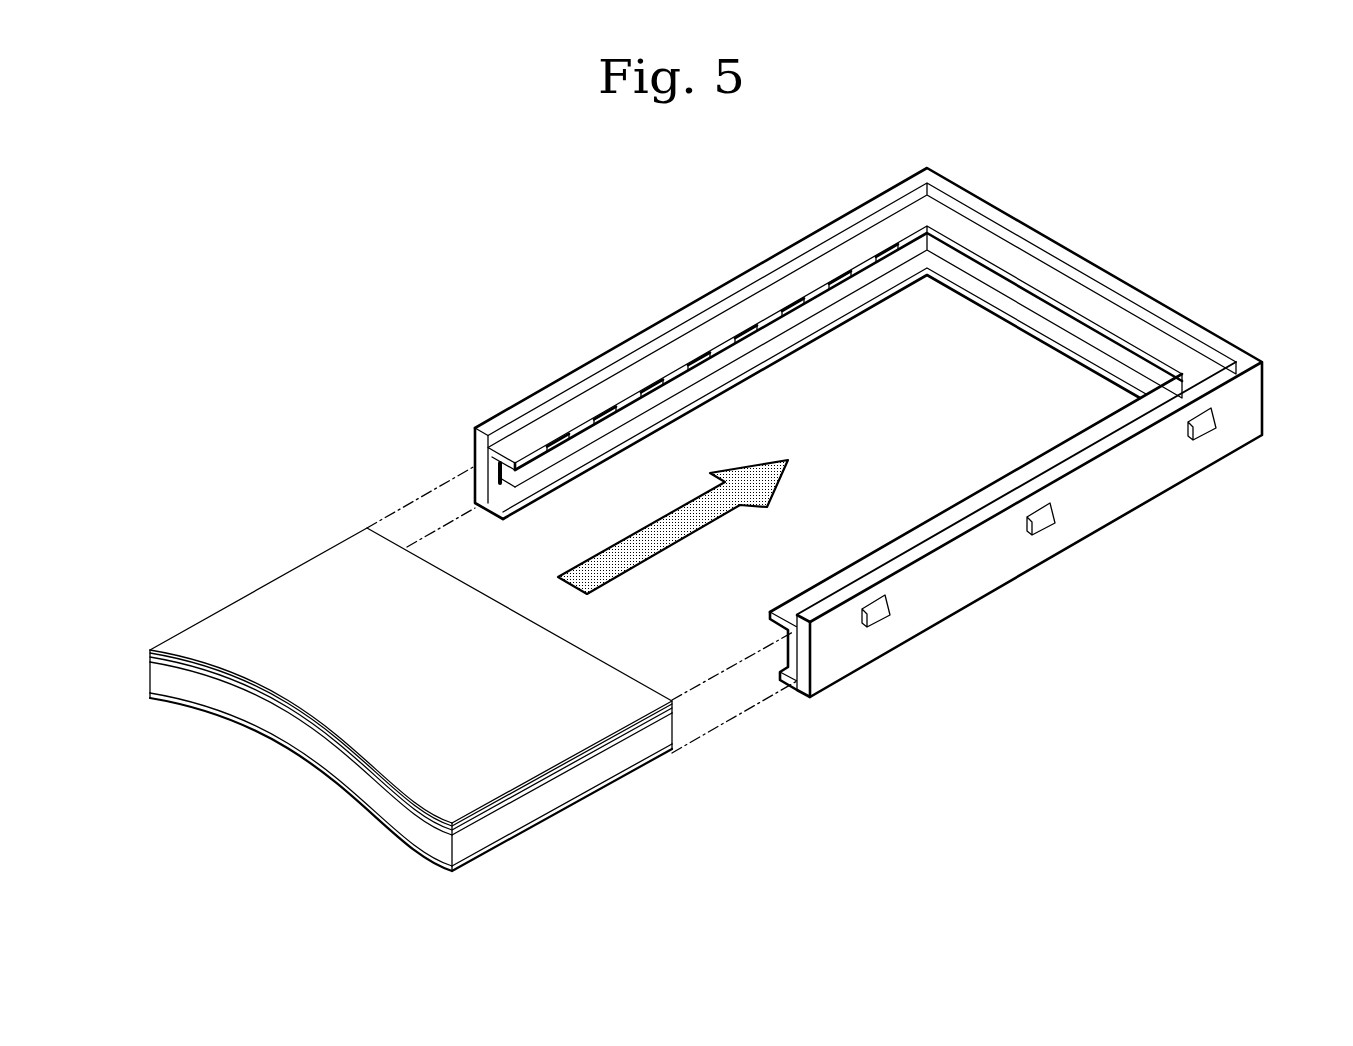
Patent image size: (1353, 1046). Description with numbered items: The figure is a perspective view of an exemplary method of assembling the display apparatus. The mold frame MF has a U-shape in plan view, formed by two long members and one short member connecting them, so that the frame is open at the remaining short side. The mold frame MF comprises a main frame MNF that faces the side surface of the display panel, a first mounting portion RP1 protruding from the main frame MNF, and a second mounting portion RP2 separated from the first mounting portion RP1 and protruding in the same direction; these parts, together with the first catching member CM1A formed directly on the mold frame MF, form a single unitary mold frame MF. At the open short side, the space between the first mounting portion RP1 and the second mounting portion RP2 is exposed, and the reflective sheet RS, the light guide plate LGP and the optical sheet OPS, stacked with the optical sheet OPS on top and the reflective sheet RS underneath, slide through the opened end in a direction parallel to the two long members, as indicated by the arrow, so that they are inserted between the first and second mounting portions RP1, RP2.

The mold frame MF is at (814, 460).
The first mounting portion RP1 is at (615, 392).
The second mounting portion RP2 is at (547, 482).
The main frame MNF is at (480, 482).
The first catching member CM1A is at (1038, 515).
The optical sheet OPS is at (675, 702).
The light guide plate LGP is at (662, 733).
The reflective sheet RS is at (655, 758).